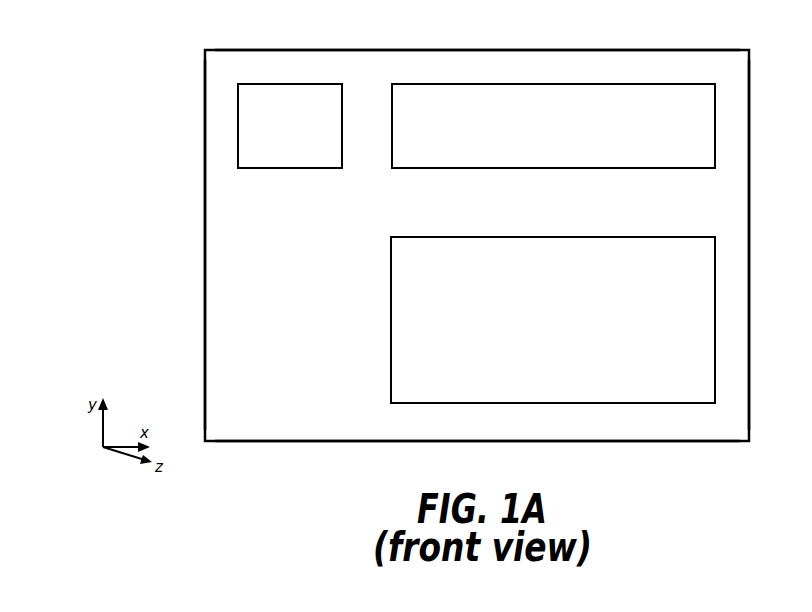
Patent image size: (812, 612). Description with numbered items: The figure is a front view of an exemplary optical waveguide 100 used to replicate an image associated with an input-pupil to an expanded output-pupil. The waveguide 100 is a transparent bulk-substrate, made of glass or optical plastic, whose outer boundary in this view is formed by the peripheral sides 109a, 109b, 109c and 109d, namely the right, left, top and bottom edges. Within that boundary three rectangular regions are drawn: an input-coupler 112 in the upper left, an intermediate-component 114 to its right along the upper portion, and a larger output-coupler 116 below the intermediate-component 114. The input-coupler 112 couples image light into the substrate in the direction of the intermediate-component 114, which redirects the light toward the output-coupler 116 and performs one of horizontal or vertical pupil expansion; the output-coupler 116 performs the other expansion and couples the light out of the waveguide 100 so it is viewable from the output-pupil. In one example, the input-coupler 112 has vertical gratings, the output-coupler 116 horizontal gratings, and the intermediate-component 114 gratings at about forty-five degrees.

The optical waveguide 100 is at (160, 78).
The peripheral side 109a is at (749, 177).
The peripheral side 109b is at (205, 190).
The peripheral side 109c is at (483, 50).
The peripheral side 109d is at (482, 441).
The input-coupler 112 is at (330, 102).
The intermediate-component 114 is at (686, 103).
The output-coupler 116 is at (690, 257).